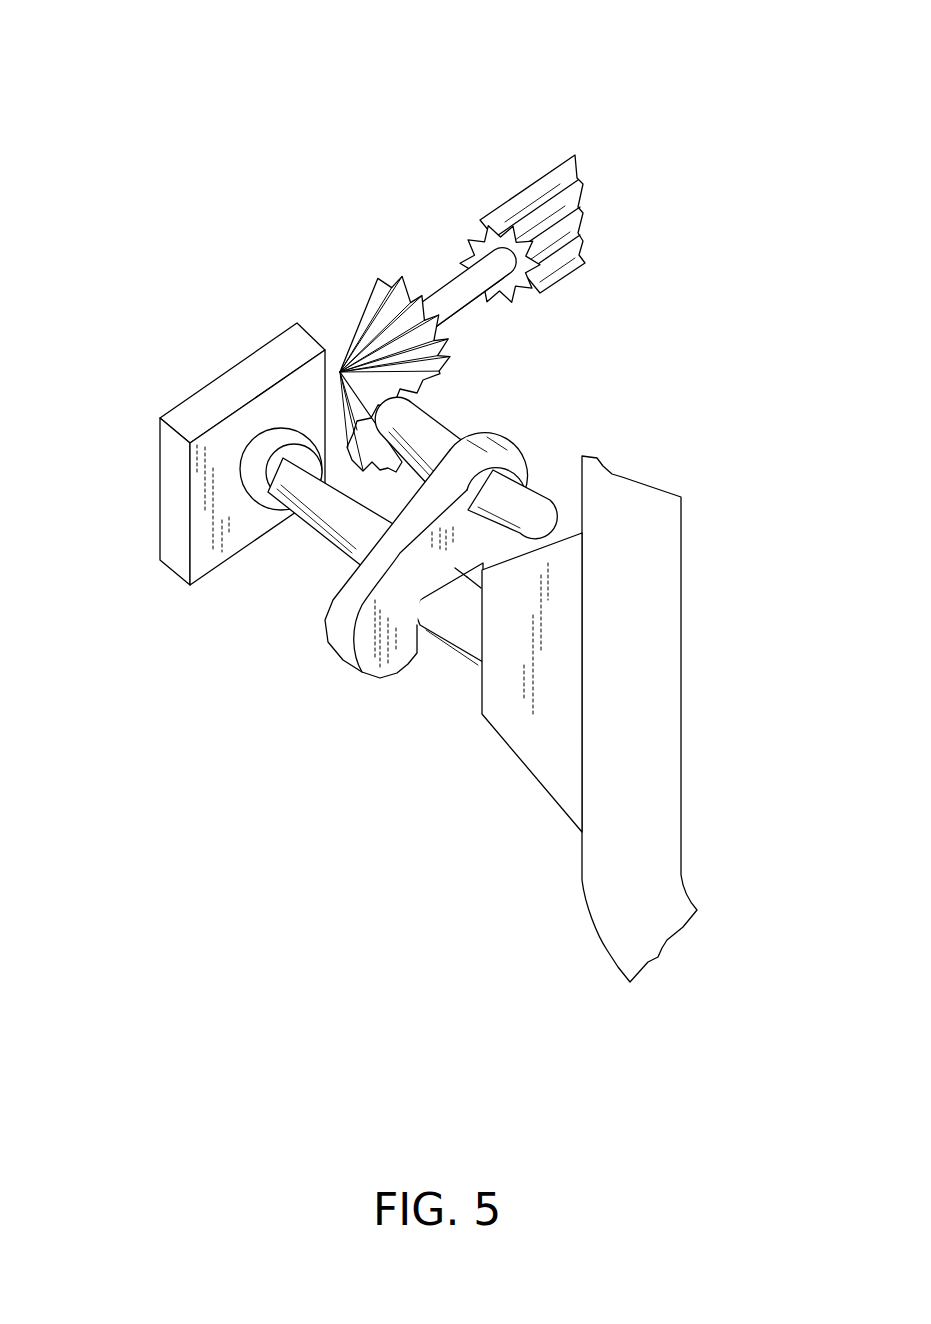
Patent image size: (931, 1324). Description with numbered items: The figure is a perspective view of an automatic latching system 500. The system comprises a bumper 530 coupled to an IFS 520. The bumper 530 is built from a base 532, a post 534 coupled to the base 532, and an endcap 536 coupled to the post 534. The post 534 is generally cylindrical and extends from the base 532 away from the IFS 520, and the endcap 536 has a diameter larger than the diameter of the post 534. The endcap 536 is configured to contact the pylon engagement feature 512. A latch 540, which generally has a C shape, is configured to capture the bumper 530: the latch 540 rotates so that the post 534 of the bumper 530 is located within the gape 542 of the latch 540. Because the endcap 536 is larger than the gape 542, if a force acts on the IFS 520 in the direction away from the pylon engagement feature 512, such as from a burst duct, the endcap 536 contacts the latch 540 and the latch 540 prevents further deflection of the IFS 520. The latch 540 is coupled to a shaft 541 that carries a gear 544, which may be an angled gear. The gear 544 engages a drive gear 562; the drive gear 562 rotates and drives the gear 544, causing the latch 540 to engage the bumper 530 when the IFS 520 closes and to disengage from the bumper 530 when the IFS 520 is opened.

The automatic latching system 500 is at (182, 78).
The pylon engagement feature 512 is at (160, 462).
The IFS 520 is at (684, 688).
The bumper 530 is at (236, 518).
The base 532 is at (541, 786).
The post 534 is at (335, 541).
The endcap 536 is at (254, 448).
The latch 540 is at (380, 680).
The shaft 541 is at (460, 420).
The gape 542 is at (486, 549).
The gear 544 is at (433, 393).
The drive gear 562 is at (362, 314).